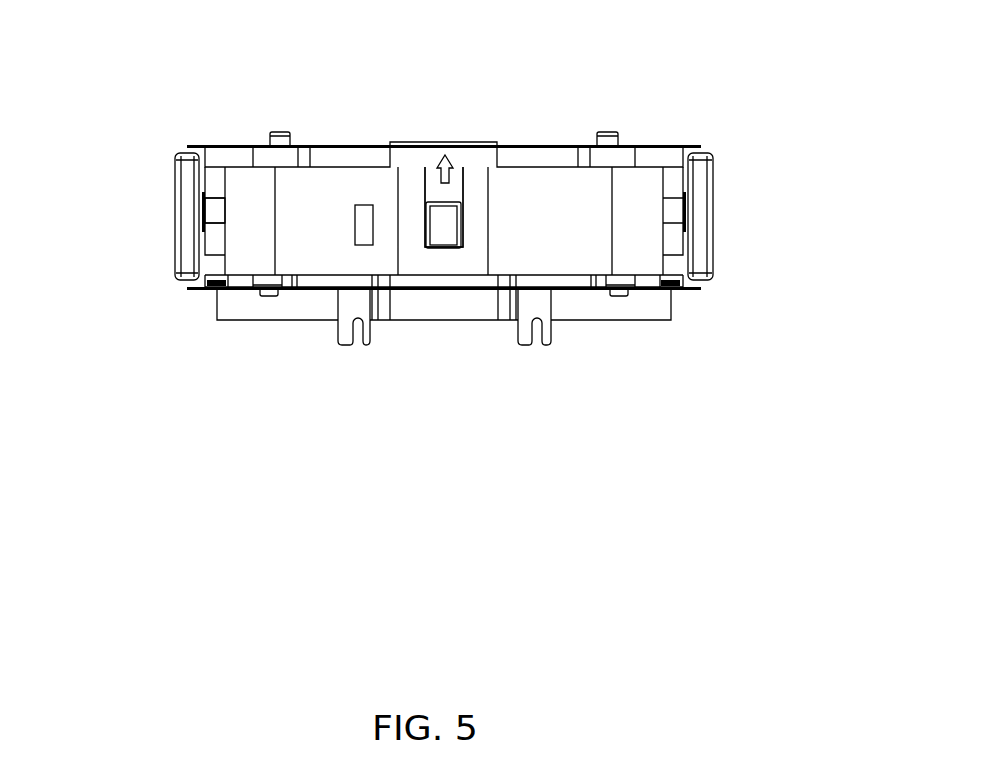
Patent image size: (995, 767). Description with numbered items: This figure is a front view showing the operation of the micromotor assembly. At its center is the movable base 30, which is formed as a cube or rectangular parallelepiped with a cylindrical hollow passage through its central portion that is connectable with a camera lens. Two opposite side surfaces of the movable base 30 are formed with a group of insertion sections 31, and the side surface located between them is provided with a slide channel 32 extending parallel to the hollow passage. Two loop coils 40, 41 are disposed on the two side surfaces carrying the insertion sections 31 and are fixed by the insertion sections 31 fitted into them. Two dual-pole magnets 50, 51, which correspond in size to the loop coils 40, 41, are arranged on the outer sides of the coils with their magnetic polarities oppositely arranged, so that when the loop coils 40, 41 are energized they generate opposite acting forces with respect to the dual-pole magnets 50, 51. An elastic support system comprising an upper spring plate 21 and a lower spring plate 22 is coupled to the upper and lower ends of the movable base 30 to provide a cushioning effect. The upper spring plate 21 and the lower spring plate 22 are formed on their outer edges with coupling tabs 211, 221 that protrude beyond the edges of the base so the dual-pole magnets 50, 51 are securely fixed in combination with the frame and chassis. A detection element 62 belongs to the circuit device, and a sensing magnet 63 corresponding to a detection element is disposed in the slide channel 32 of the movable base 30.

The upper spring plate 21 is at (335, 143).
The coupling tab 211 is at (690, 147).
The lower spring plate 22 is at (297, 289).
The coupling tab 221 is at (693, 290).
The movable base 30 is at (542, 180).
The insertion sections 31 is at (212, 208).
The slide channel 32 is at (430, 173).
The loop coil 40 is at (670, 178).
The loop coil 41 is at (215, 173).
The dual-pole magnet 50 is at (705, 210).
The dual-pole magnet 51 is at (177, 208).
The detection element 62 is at (362, 232).
The sensing magnet 63 is at (442, 240).